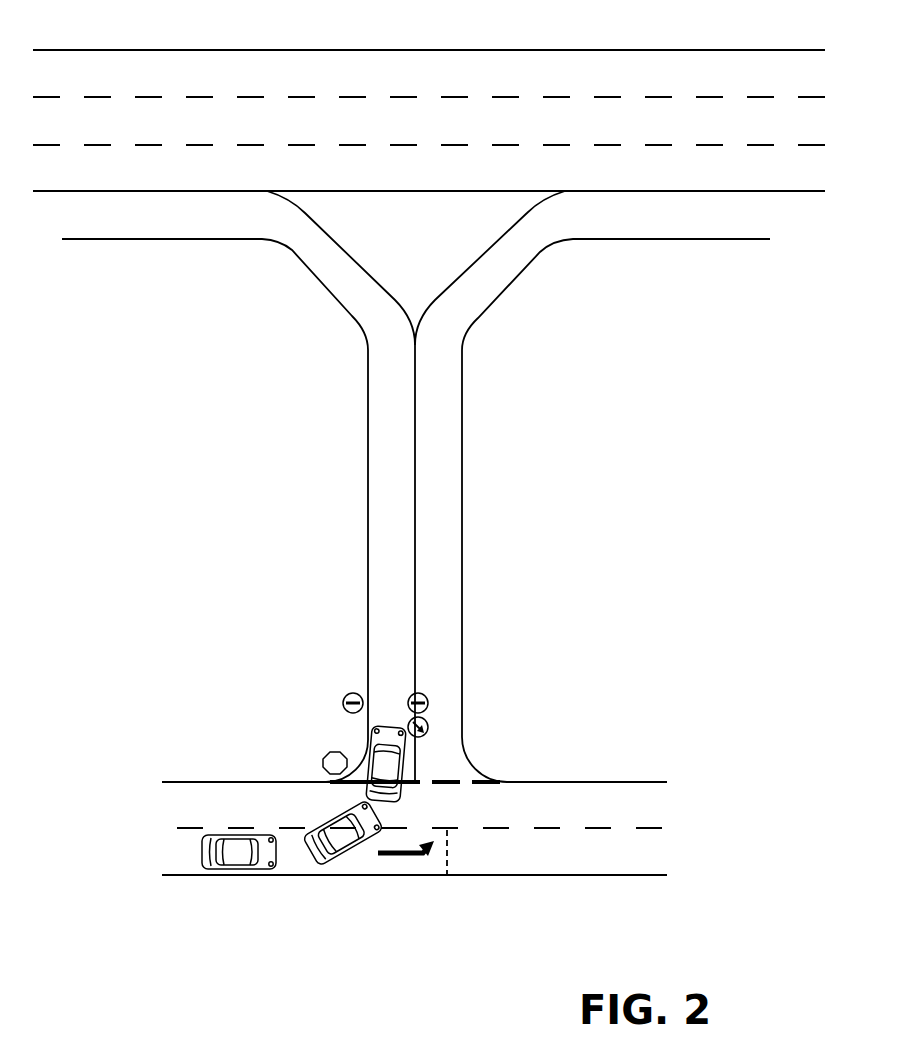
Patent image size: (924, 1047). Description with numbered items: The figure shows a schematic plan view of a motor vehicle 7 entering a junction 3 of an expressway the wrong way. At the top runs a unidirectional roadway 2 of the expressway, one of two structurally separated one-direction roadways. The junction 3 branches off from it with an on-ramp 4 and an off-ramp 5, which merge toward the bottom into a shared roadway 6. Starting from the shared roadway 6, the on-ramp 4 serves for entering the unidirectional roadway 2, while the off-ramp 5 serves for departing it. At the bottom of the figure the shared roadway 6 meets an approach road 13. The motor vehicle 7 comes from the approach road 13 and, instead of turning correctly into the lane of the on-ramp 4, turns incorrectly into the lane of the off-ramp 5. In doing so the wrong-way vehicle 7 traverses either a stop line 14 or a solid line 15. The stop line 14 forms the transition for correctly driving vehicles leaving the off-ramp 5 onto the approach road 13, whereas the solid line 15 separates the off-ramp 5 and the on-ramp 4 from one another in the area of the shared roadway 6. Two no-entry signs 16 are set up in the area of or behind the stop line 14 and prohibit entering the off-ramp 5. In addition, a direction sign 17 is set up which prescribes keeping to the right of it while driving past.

The unidirectional roadway 2 is at (738, 107).
The junction 3 is at (512, 436).
The on-ramp 4 is at (513, 270).
The off-ramp 5 is at (320, 270).
The shared roadway 6 is at (437, 557).
The motor vehicle 7 is at (230, 857).
The approach road 13 is at (610, 808).
The stop line 14 is at (357, 780).
The solid line 15 is at (413, 670).
The no-entry sign 16 is at (350, 694).
The direction sign 17 is at (428, 718).